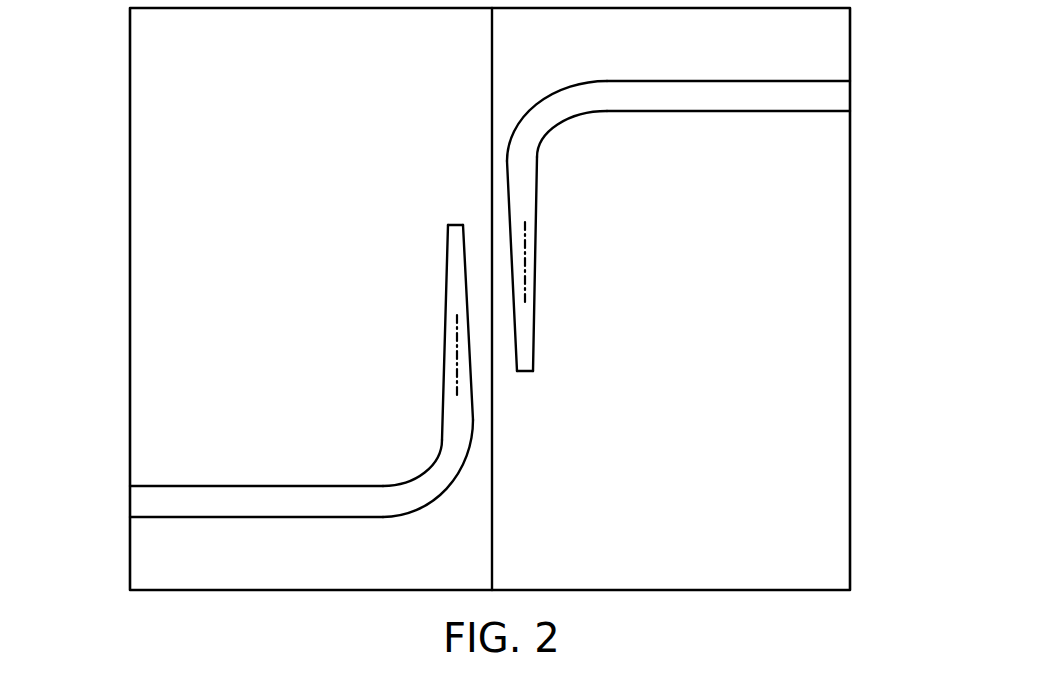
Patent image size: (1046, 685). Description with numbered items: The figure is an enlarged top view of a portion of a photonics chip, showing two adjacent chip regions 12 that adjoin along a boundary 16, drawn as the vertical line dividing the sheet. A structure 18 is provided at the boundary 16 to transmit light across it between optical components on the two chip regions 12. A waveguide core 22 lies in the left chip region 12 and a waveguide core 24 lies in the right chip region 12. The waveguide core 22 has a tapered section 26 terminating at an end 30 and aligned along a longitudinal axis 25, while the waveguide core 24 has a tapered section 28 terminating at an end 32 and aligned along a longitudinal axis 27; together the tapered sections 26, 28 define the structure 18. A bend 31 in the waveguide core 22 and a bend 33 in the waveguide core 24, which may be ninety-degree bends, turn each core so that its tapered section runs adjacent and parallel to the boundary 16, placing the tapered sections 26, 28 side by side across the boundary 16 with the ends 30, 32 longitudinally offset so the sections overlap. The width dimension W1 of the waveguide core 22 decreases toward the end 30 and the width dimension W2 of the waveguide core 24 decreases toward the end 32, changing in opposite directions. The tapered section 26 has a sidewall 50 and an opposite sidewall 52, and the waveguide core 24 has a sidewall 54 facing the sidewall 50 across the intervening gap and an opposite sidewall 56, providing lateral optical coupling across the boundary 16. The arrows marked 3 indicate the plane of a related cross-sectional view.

The chip region 12 is at (178, 152).
The boundary 16 is at (492, 87).
The structure 18 is at (352, 195).
The waveguide core 22 is at (185, 505).
The waveguide core 24 is at (828, 100).
The longitudinal axis 25 is at (398, 356).
The tapered section 26 is at (427, 291).
The longitudinal axis 27 is at (512, 258).
The tapered section 28 is at (621, 314).
The end 30 is at (453, 225).
The bend 31 is at (412, 450).
The end 32 is at (527, 372).
The bend 33 is at (562, 150).
The sidewall 50 is at (470, 325).
The sidewall 52 is at (444, 298).
The sidewall 54 is at (512, 258).
The sidewall 56 is at (537, 290).
The width dimension W1 is at (223, 568).
The width dimension W2 is at (729, 30).
The section line for FIG. 3 is at (80, 330).